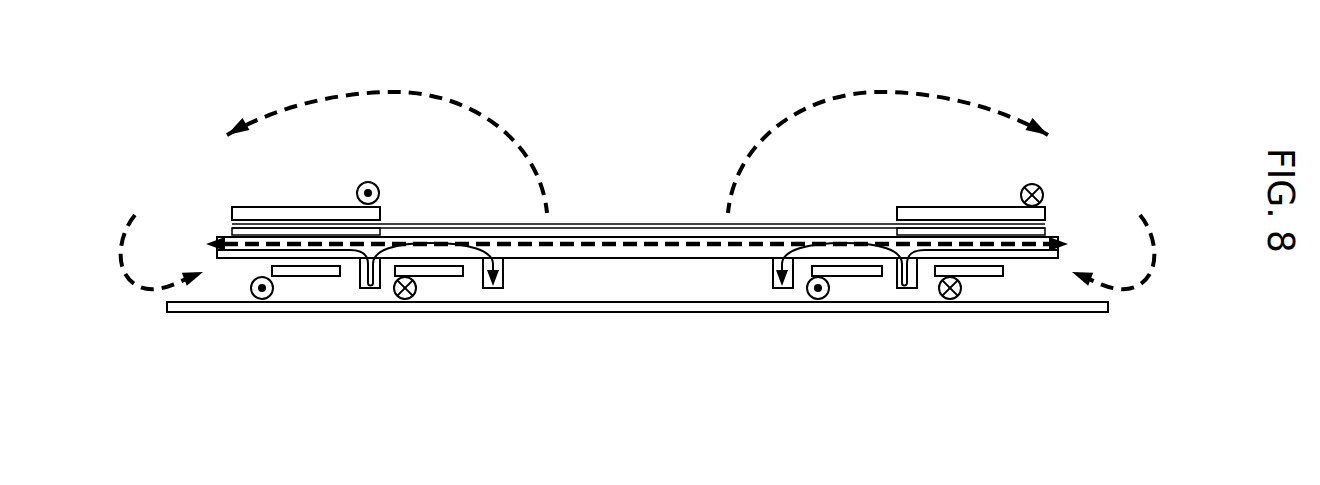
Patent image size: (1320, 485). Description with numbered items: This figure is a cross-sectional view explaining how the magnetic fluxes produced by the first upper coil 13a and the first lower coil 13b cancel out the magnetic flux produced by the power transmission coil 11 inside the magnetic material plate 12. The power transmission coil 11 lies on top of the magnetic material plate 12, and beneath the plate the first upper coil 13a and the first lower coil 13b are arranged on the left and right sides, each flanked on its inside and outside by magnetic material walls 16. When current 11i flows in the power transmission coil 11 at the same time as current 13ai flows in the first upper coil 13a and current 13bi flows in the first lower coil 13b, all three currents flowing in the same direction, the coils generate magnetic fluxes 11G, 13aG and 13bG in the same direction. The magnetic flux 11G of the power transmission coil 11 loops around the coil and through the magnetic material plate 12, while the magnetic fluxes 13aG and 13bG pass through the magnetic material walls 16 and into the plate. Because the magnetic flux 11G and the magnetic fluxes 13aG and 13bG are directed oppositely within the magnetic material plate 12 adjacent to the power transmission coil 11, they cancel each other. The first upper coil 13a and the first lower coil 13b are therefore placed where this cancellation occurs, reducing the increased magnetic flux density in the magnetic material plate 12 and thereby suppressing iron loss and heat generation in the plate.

The power transmission coil 11 is at (290, 214).
The current of the power transmission coil 11i is at (369, 182).
The magnetic flux of the power transmission coil 11G is at (402, 92).
The magnetic material plate 12 is at (228, 237).
The first upper coil 13a is at (297, 277).
The current of the first upper coil 13ai is at (261, 299).
The magnetic flux of the first upper coil 13aG is at (463, 240).
The first lower coil 13b is at (865, 277).
The current of the first lower coil 13bi is at (818, 299).
The magnetic flux of the first lower coil 13bG is at (824, 240).
The magnetic material wall 16 is at (367, 290).